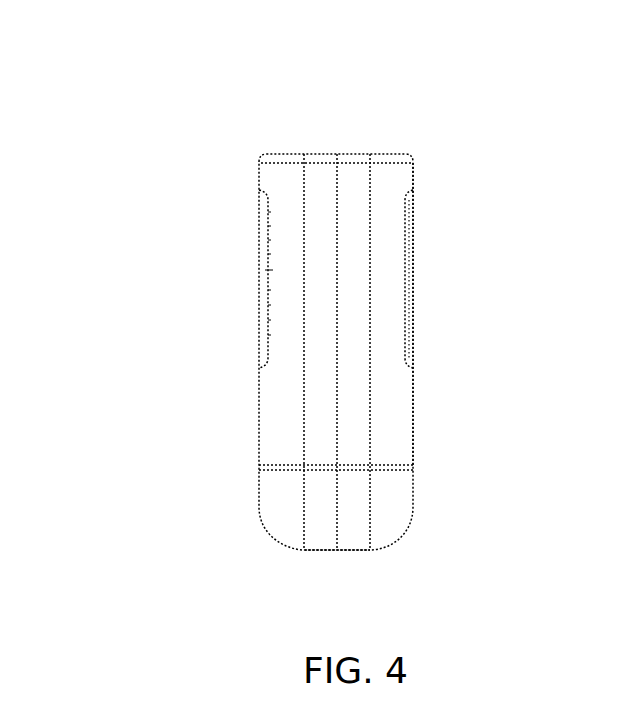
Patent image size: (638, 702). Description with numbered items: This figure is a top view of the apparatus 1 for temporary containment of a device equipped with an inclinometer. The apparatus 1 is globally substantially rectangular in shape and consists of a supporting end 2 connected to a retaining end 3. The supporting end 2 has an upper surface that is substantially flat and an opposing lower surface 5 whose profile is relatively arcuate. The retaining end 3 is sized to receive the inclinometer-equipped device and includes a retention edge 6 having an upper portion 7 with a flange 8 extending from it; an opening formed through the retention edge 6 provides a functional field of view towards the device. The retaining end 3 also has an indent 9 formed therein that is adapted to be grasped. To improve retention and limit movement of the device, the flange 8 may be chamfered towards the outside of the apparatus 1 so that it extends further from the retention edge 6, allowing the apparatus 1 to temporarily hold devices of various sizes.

The apparatus 1 is at (143, 115).
The supporting end 2 is at (438, 510).
The retaining end 3 is at (438, 373).
The lower surface 5 is at (353, 552).
The retention edge 6 is at (263, 378).
The upper portion 7 is at (413, 185).
The flange 8 is at (383, 148).
The indent 9 is at (403, 274).